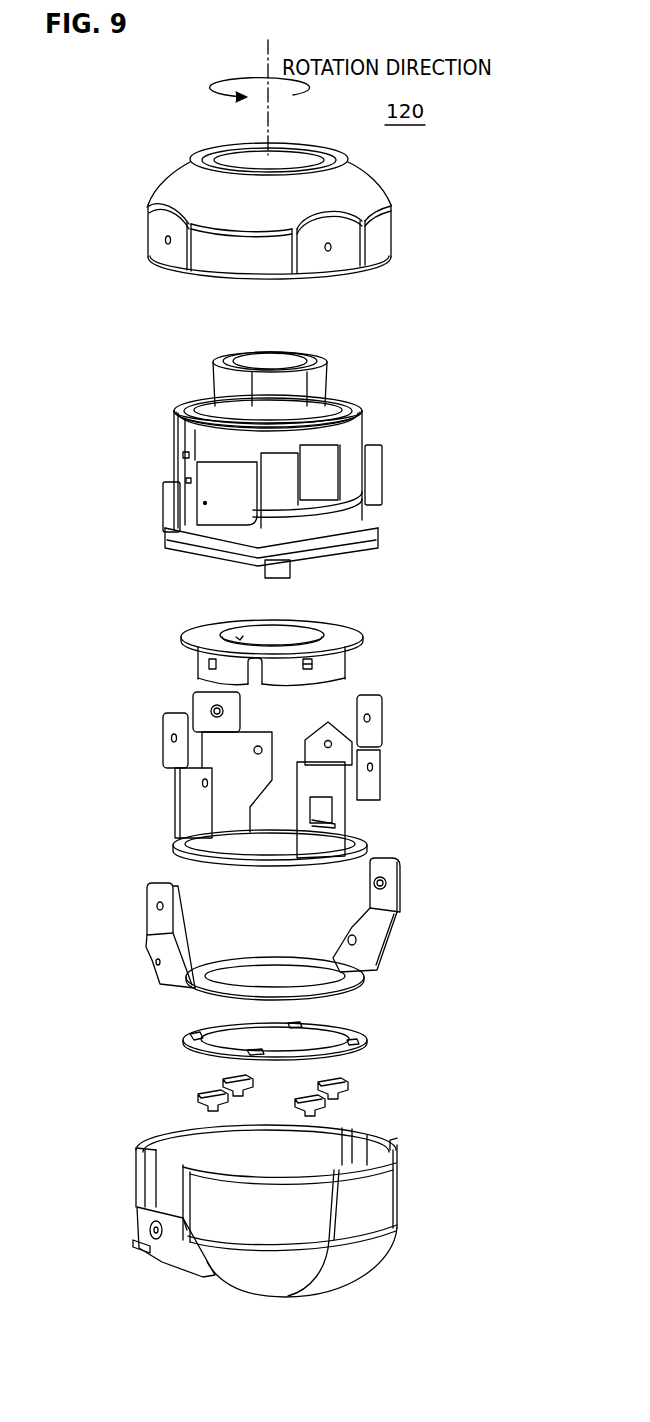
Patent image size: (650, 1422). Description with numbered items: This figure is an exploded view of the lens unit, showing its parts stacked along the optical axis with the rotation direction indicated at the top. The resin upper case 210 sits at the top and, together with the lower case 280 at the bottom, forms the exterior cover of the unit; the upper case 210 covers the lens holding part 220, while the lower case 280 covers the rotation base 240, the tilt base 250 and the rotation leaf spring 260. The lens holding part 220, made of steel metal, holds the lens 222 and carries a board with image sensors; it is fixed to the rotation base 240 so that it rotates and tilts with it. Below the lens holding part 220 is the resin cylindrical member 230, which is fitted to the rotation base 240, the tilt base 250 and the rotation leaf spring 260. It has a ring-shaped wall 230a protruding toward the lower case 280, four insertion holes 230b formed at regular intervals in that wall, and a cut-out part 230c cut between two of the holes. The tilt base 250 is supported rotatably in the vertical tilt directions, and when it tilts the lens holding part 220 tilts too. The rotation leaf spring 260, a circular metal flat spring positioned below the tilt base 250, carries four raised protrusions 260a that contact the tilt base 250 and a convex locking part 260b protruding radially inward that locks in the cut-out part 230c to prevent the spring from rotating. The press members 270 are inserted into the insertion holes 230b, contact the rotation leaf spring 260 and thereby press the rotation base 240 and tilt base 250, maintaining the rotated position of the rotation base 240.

The upper case 210 is at (388, 196).
The lens holding part 220 is at (380, 457).
The lens 222 is at (283, 353).
The cylindrical member 230 is at (360, 637).
The ring-shaped wall 230a is at (343, 663).
The insertion holes 230b is at (306, 660).
The cut-out part 230c is at (253, 663).
The rotation base 240 is at (382, 728).
The tilt base 250 is at (400, 896).
The rotation leaf spring 260 is at (367, 1040).
The protrusions 260a is at (195, 1037).
The convex locking part 260b is at (256, 1051).
The press members 270 is at (353, 1079).
The lower case 280 is at (397, 1206).